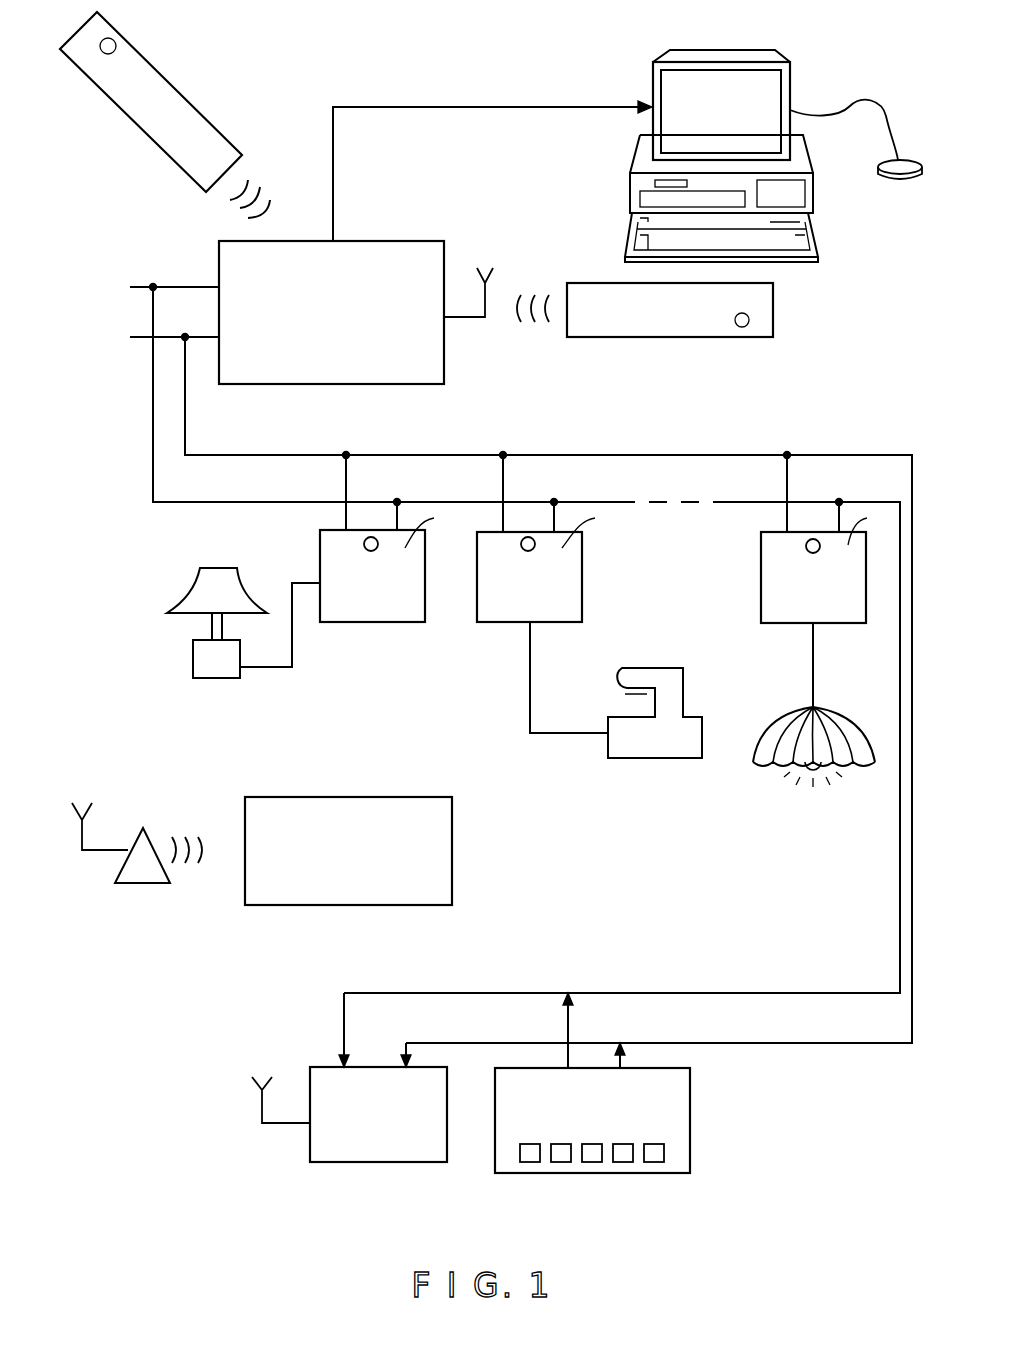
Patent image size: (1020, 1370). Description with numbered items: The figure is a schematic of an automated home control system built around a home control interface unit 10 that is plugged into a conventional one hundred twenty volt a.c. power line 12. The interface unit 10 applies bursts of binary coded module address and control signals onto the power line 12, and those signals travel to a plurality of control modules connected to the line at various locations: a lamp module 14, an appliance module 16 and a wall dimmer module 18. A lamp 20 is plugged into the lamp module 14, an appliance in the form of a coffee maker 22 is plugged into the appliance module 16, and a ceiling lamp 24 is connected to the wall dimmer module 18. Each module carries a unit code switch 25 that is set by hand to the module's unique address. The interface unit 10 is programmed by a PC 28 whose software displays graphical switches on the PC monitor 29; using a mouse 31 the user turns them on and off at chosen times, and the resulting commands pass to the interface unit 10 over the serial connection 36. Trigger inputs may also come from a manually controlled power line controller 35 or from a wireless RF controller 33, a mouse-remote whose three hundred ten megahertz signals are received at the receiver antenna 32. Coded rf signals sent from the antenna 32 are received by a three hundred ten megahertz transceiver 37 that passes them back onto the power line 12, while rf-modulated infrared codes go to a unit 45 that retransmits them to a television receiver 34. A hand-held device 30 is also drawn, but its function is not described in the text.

The home control interface unit 10 is at (314, 385).
The a.c. power line 12 is at (135, 302).
The lamp module 14 is at (426, 610).
The appliance module 16 is at (583, 607).
The wall dimmer module 18 is at (760, 578).
The lamp 20 is at (218, 677).
The coffee maker 22 is at (605, 752).
The ceiling lamp 24 is at (855, 770).
The unit code switch 25 is at (372, 537).
The PC 28 is at (686, 134).
The PC monitor 29 is at (713, 87).
The remote control 30 is at (192, 103).
The mouse 31 is at (895, 178).
The 310 MHz receiver antenna 32 is at (490, 270).
The wireless RF controller 33 is at (773, 325).
The television receiver 34 is at (355, 797).
The manually controlled power line controller 35 is at (690, 1152).
The RS-232 connection 36 is at (425, 105).
The 310 MHz transceiver 37 is at (412, 1163).
The IR retransmitting unit 45 is at (143, 827).